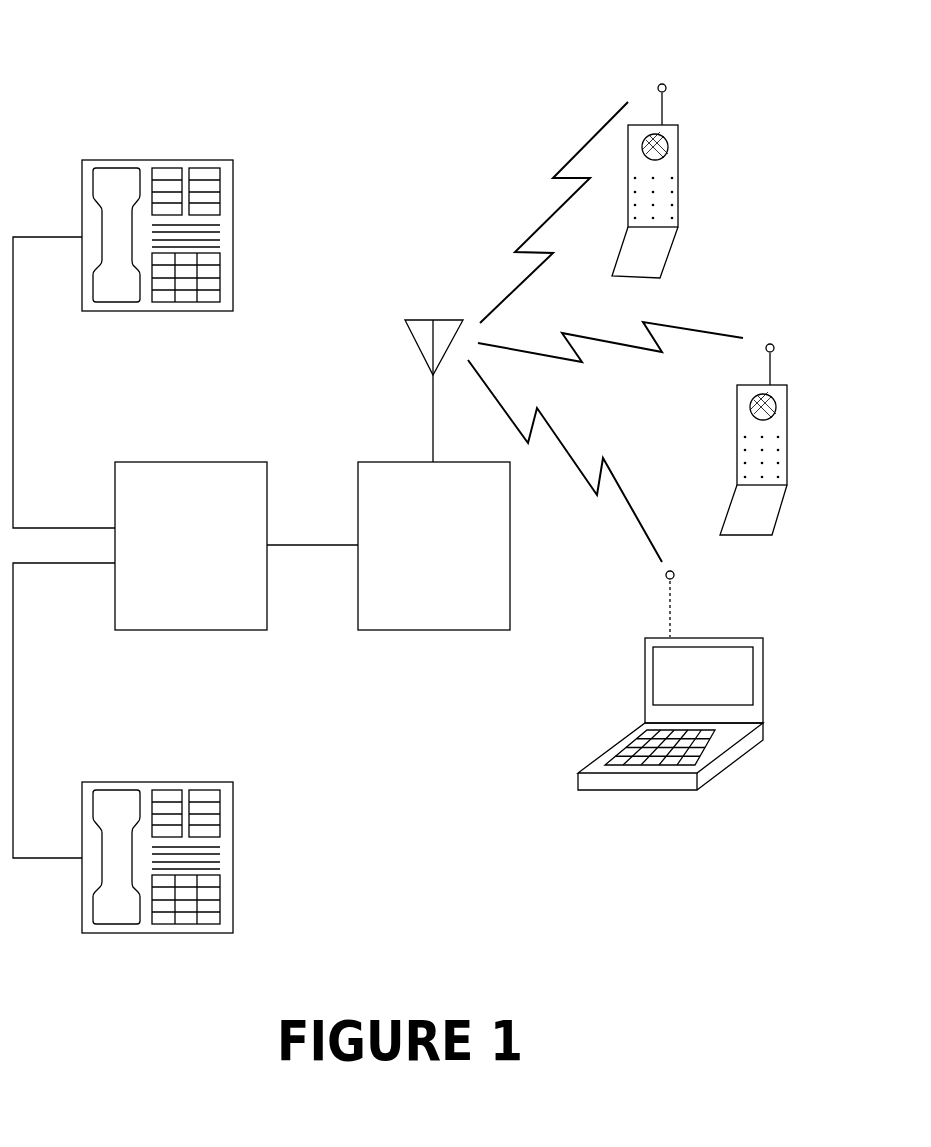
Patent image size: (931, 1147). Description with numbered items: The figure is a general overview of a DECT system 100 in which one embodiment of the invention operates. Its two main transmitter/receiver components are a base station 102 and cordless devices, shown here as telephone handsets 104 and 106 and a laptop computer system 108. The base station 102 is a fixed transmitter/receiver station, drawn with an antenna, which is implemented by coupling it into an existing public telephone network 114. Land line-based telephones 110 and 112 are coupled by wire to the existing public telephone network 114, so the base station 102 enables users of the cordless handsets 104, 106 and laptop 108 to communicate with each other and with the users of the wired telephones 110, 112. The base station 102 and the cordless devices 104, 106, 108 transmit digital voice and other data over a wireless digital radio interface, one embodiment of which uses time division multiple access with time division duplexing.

The DECT system 100 is at (66, 47).
The base station 102 is at (452, 606).
The telephone handset 104 is at (645, 280).
The telephone handset 106 is at (753, 538).
The laptop computer system 108 is at (618, 790).
The land line-based telephone 110 is at (218, 313).
The land line-based telephone 112 is at (218, 934).
The existing public telephone network 114 is at (210, 606).